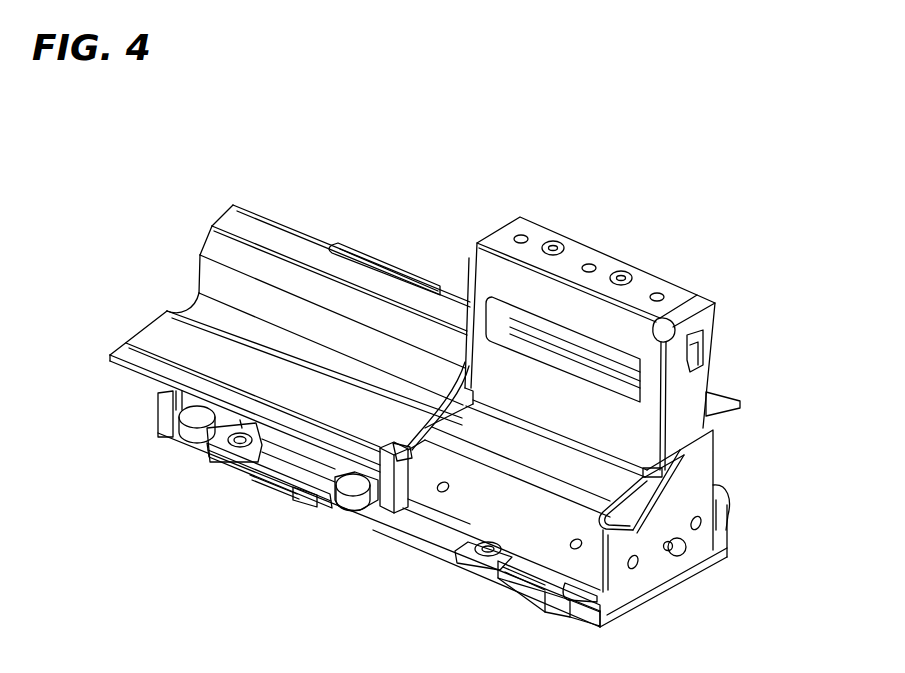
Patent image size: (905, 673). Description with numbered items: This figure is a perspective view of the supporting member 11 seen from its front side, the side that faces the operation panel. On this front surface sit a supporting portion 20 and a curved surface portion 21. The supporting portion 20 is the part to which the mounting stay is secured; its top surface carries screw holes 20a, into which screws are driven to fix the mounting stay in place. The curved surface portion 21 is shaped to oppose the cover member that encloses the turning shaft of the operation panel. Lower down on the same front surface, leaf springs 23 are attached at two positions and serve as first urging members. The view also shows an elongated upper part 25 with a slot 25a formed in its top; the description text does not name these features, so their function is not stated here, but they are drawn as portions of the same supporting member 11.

The supporting member 11 is at (751, 293).
The supporting portion 20 is at (507, 287).
The screw holes 20a is at (657, 297).
The curved surface portion 21 is at (163, 345).
The leaf springs 23 is at (277, 485).
The guide bar 25 is at (320, 229).
The slot 25a is at (377, 263).